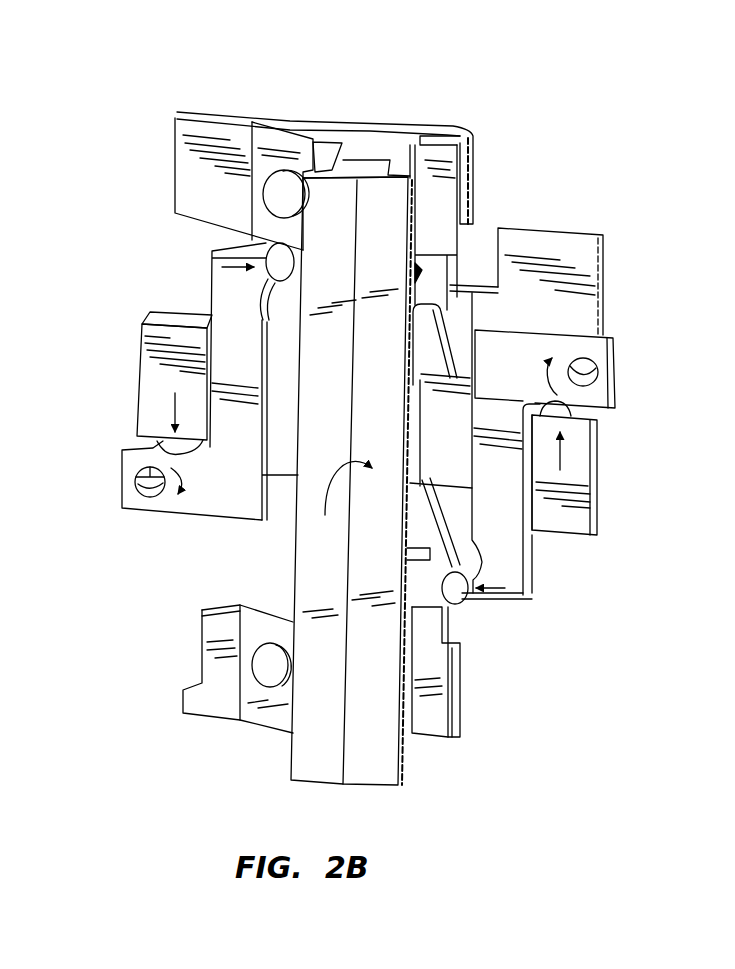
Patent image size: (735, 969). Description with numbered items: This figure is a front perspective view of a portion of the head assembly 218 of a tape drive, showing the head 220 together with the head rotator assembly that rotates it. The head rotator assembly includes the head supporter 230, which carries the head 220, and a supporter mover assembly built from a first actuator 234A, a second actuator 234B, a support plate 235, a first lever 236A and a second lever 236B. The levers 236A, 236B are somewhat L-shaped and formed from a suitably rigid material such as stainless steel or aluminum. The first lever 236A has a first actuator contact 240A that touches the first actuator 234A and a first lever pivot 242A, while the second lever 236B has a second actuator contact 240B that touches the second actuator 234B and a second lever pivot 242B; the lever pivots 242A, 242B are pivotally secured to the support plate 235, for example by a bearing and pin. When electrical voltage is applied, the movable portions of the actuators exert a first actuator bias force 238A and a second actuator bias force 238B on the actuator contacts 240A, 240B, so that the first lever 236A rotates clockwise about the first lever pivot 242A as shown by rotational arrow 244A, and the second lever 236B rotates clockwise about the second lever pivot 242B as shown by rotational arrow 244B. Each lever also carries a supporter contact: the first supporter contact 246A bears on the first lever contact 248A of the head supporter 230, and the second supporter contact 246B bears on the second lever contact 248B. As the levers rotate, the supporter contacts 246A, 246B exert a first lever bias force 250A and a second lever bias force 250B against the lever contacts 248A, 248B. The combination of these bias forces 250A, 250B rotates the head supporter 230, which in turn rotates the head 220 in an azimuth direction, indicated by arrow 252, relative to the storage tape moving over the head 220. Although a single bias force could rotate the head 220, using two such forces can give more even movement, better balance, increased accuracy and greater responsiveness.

The head assembly 218 is at (430, 95).
The head 220 is at (368, 770).
The head supporter 230 is at (435, 280).
The support plate 235 is at (583, 257).
The first actuator 234A is at (590, 505).
The second actuator 234B is at (142, 330).
The first lever 236A is at (468, 597).
The second lever 236B is at (210, 290).
The first actuator bias force 238A is at (567, 457).
The second actuator bias force 238B is at (172, 402).
The first actuator contact 240A is at (567, 403).
The second actuator contact 240B is at (150, 448).
The first lever pivot 242A is at (585, 372).
The second lever pivot 242B is at (150, 497).
The rotational arrow 244A is at (553, 352).
The rotational arrow 244B is at (187, 478).
The first supporter contact 246A is at (463, 607).
The second supporter contact 246B is at (250, 230).
The first lever contact 248A is at (465, 610).
The second lever contact 248B is at (281, 243).
The first lever bias force 250A is at (505, 585).
The second lever bias force 250B is at (232, 262).
The azimuth direction arrow 252 is at (325, 515).